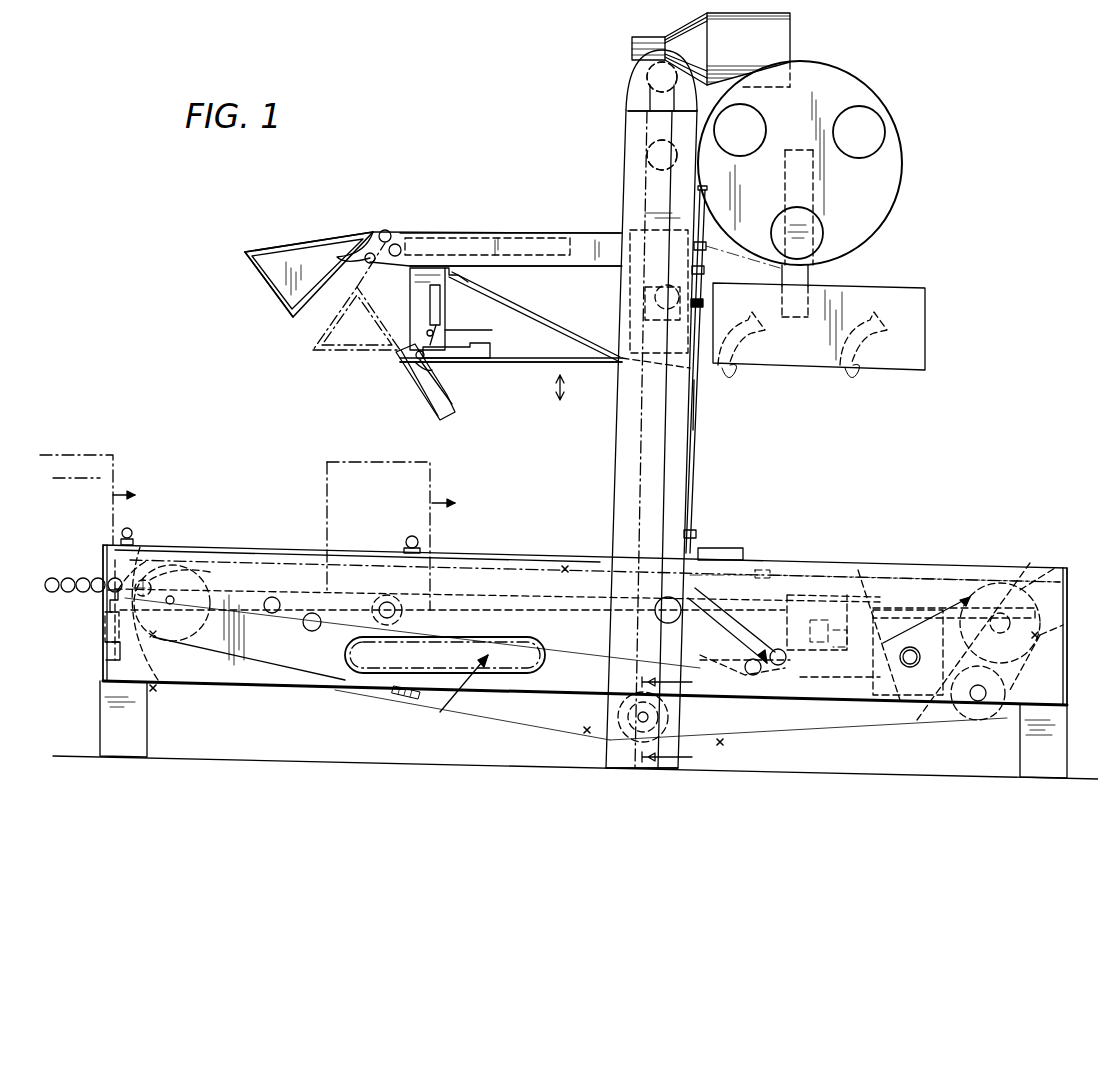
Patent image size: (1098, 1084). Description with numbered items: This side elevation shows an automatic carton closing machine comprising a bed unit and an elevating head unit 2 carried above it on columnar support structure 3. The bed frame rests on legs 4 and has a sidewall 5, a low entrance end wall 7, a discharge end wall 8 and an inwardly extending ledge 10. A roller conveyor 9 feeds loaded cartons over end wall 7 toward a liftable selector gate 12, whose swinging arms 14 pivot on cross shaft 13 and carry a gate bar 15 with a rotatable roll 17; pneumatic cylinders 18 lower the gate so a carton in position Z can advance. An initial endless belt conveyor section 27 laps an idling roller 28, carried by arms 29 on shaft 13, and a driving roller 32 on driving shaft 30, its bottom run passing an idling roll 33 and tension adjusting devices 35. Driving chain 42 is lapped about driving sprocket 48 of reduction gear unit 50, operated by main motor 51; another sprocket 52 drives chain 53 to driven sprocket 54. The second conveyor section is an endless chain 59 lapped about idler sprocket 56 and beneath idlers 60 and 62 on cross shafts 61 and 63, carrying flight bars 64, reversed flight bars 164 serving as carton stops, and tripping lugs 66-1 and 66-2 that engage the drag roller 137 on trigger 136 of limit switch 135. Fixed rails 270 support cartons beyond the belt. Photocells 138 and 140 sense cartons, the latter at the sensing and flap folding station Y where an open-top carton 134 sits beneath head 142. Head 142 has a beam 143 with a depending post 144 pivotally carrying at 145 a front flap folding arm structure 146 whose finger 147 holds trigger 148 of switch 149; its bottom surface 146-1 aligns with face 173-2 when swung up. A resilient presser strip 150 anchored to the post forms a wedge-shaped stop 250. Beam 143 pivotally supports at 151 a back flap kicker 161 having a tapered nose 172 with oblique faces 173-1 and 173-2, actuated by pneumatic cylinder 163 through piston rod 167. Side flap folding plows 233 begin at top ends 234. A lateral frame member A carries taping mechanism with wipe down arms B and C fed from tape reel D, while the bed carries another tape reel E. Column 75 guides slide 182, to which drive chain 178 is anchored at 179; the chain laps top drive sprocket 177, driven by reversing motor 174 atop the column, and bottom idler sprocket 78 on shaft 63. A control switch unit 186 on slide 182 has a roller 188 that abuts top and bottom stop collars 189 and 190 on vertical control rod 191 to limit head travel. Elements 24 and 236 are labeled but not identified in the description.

The elevating head unit 2 is at (565, 225).
The columnar structure 3 is at (702, 457).
The legs 4 is at (118, 768).
The sidewall 5 is at (268, 684).
The end wall 7 is at (100, 668).
The end wall 8 is at (1070, 590).
The roller conveyor 9 is at (48, 578).
The ledge 10 is at (830, 560).
The liftable gate 12 is at (100, 598).
The cross shaft 13 is at (200, 560).
The swinging arms 14 is at (140, 565).
The gate bar 15 is at (110, 577).
The rotatable roll 17 is at (128, 580).
The pneumatic cylinders 18 is at (100, 645).
The adjusting screw 24 is at (102, 620).
The initial endless conveyor section 27 is at (245, 560).
The idling roller 28 is at (178, 565).
The arms 29 is at (139, 613).
The driving shaft 30 is at (380, 640).
The driving roller 32 is at (376, 598).
The idling roll 33 is at (268, 615).
The tension adjusting devices 35 is at (308, 632).
The driving chain 42 is at (890, 605).
The driving sprocket 48 is at (917, 722).
The reduction gear unit 50 is at (915, 600).
The main driving electric motor 51 is at (879, 617).
The driving sprocket 52 is at (900, 700).
The endless driving chain 53 is at (960, 600).
The driven sprocket 54 is at (1045, 580).
The idler sprocket 56 is at (168, 650).
The endless conveyor chain 59 is at (515, 560).
The idler 60 is at (978, 718).
The cross shaft 61 is at (1012, 692).
The idler 62 is at (660, 722).
The cross shaft 63 is at (670, 710).
The flight bars 64 is at (566, 562).
The tripping lug 66-1 is at (772, 572).
The tripping lug 66-2 is at (406, 699).
The column 75 is at (620, 445).
The sprocket 78 is at (612, 750).
The open-top carton 134 is at (320, 545).
The limit control 135 is at (722, 546).
The actuating trigger 136 is at (740, 565).
The drag roller 137 is at (782, 570).
The photocell 138 is at (132, 530).
The second photocell 140 is at (412, 535).
The flap folding and carton closing head 142 is at (462, 228).
The lateral frame member 143 is at (482, 234).
The depending post 144 is at (450, 325).
The pivot 145 is at (405, 358).
The front flap folding arm structure 146 is at (462, 415).
The bottom surface 146-1 is at (425, 380).
The finger 147 is at (420, 370).
The trigger 148 is at (484, 350).
The electrical circuit switch device 149 is at (412, 294).
The resilient presser strip 150 is at (585, 368).
The pivot 151 is at (385, 228).
The back flap folding arm 161 is at (252, 248).
The pneumatic cylinder 163 is at (432, 235).
The reversed flight bar 164 is at (445, 565).
The piston rod 167 is at (396, 243).
The tapered nose 172 is at (280, 320).
The oblique rear face 173-1 is at (348, 245).
The oblique face 173-2 is at (262, 285).
The reversing electric motor 174 is at (790, 40).
The top drive sprocket 177 is at (645, 78).
The drive chain 178 is at (623, 132).
The chain anchorage 179 is at (625, 306).
The slide 182 is at (632, 192).
The reversing motor control switch unit 186 is at (626, 292).
The roller 188 is at (705, 302).
The top stop collar 189 is at (710, 272).
The bottom stop collar 190 is at (695, 530).
The vertical control rod 191 is at (700, 420).
The side flap folding plow 233 is at (540, 316).
The plow top ends 234 is at (465, 282).
The cylinder 236 is at (442, 305).
The wedge-shaped stop 250 is at (380, 330).
The fixed rails 270 is at (1010, 590).
The lateral frame member A is at (928, 355).
The wipe down arms B is at (742, 380).
The wipe down arms C is at (865, 385).
The tape supply reel D is at (903, 140).
The adhesive tape supply reel E is at (464, 693).
The sensing and flap folding station Y is at (435, 478).
The carton position Z is at (118, 476).